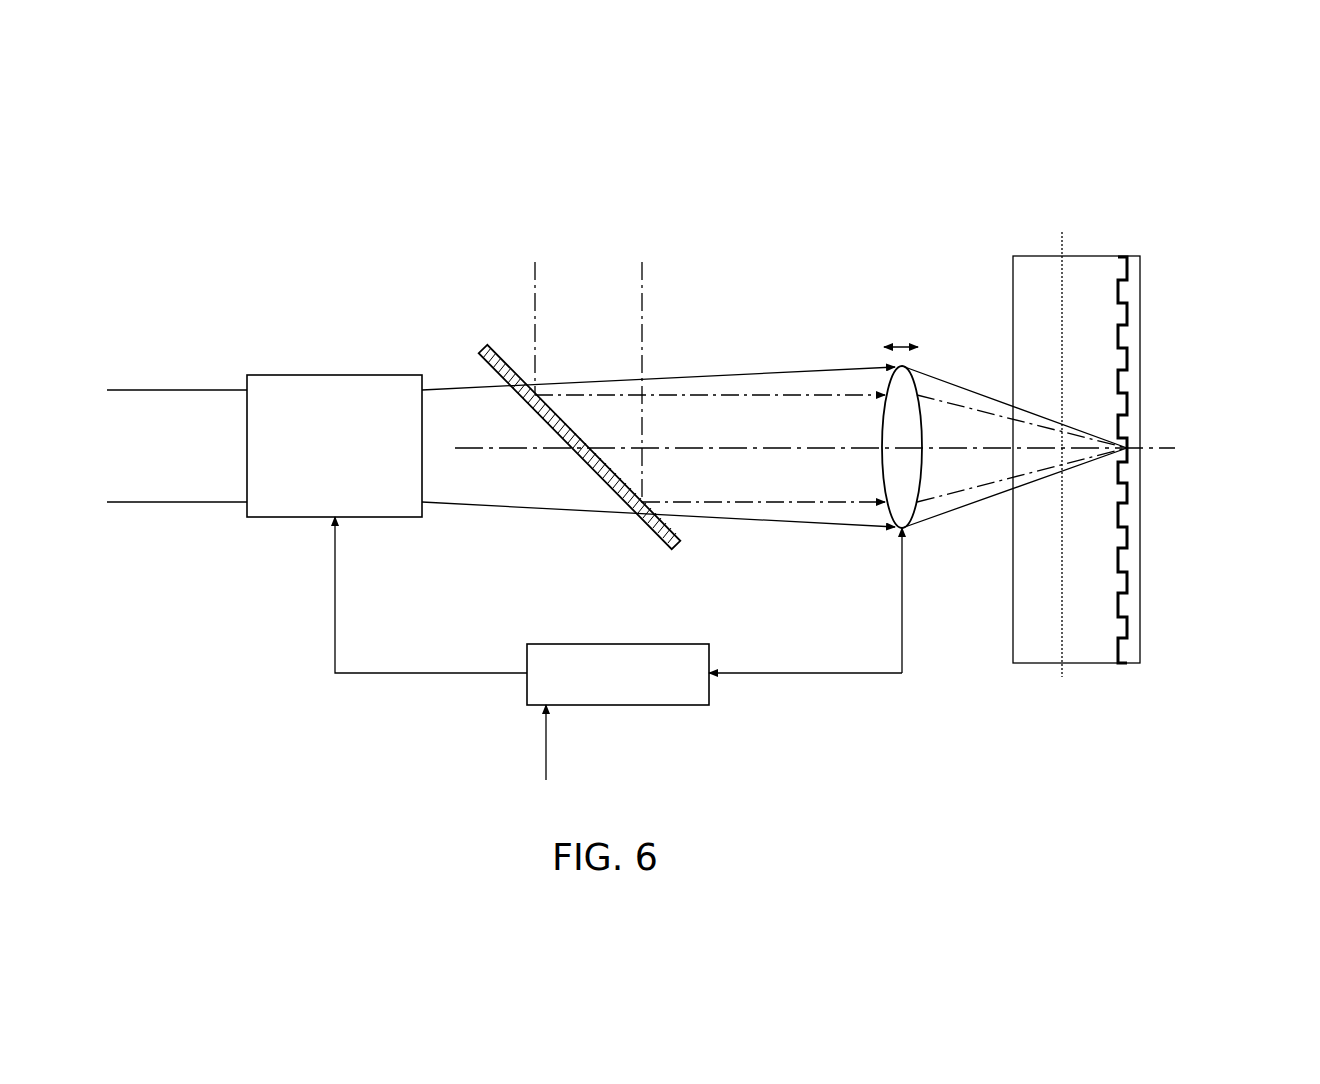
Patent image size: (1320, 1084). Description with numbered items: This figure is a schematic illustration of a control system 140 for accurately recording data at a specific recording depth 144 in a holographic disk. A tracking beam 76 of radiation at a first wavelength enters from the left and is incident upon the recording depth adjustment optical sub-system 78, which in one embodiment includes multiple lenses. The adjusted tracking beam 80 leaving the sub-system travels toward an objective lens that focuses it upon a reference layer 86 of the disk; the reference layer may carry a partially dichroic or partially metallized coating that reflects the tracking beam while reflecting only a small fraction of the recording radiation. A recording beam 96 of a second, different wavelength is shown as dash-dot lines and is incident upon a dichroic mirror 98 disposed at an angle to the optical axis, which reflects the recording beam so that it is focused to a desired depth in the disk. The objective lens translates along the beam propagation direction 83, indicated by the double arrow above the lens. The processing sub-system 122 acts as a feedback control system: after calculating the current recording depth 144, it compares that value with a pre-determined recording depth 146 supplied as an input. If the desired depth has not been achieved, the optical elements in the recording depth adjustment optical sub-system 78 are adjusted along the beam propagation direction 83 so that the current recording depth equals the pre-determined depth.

The control system 140 is at (1176, 159).
The tracking beam 76 is at (172, 455).
The recording depth adjustment optical sub-system 78 is at (335, 375).
The adjusted tracking beam 80 is at (531, 515).
The recording beam 96 is at (645, 305).
The dichroic mirror 98 is at (673, 556).
The beam propagation direction 83 is at (905, 344).
The recording depth 144 is at (1061, 252).
The reference layer 86 is at (1124, 668).
The processing sub-system 122 is at (668, 705).
The pre-determined recording depth 146 is at (545, 760).